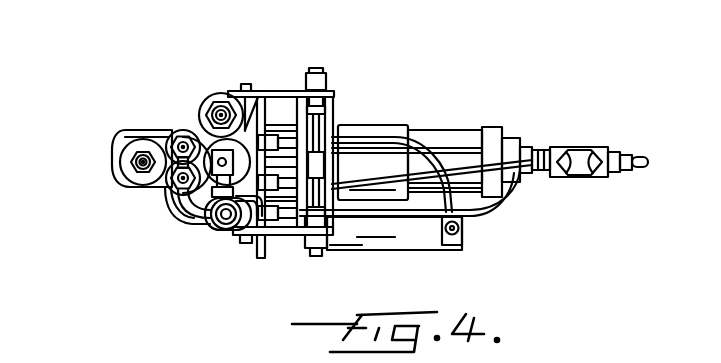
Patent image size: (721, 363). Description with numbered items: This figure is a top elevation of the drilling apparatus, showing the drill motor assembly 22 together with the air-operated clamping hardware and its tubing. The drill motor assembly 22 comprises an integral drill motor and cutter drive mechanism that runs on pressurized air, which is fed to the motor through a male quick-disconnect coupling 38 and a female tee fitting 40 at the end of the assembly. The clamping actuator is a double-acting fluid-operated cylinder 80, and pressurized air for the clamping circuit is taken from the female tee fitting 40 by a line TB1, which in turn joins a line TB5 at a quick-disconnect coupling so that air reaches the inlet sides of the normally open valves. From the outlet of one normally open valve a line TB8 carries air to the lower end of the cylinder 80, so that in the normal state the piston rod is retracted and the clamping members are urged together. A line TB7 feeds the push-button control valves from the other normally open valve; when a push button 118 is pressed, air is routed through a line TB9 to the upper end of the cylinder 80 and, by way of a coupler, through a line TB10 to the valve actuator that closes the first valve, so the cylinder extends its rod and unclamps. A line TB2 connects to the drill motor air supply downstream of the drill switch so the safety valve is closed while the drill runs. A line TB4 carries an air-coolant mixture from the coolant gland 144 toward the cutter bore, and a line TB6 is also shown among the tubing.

The drill motor assembly 22 is at (441, 124).
The male quick-disconnect coupling 38 is at (642, 170).
The female tee fitting 40 is at (605, 148).
The fluid-operated cylinder 80 is at (262, 93).
The push button 118 is at (315, 68).
The coolant gland 144 is at (408, 238).
The line TB1 is at (484, 126).
The line TB2 is at (492, 207).
The line TB4 is at (400, 100).
The line TB5 is at (176, 228).
The tube fitting 6 TB6 is at (168, 163).
The line TB7 is at (198, 236).
The line TB8 is at (202, 133).
The line TB9 is at (289, 235).
The line TB10 is at (172, 198).